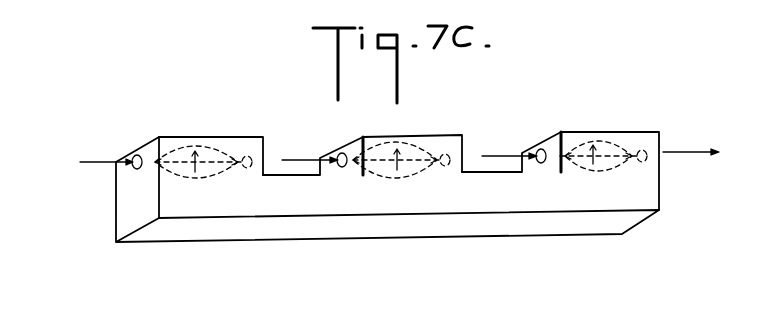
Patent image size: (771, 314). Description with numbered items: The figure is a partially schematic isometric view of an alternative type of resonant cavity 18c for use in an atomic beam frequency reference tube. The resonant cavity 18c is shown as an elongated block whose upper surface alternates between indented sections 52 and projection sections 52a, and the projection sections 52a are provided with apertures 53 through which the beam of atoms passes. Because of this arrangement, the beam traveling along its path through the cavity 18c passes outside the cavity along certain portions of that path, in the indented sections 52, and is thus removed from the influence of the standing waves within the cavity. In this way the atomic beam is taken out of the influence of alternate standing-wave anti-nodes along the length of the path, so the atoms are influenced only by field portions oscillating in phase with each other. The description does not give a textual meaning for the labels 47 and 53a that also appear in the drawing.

The resonant cavity 18c is at (433, 240).
The optical element / lens 47 is at (208, 147).
The indented sections 52 is at (298, 175).
The projection sections 52a is at (453, 133).
The apertures 53 is at (137, 155).
The raised portion 53a is at (253, 136).